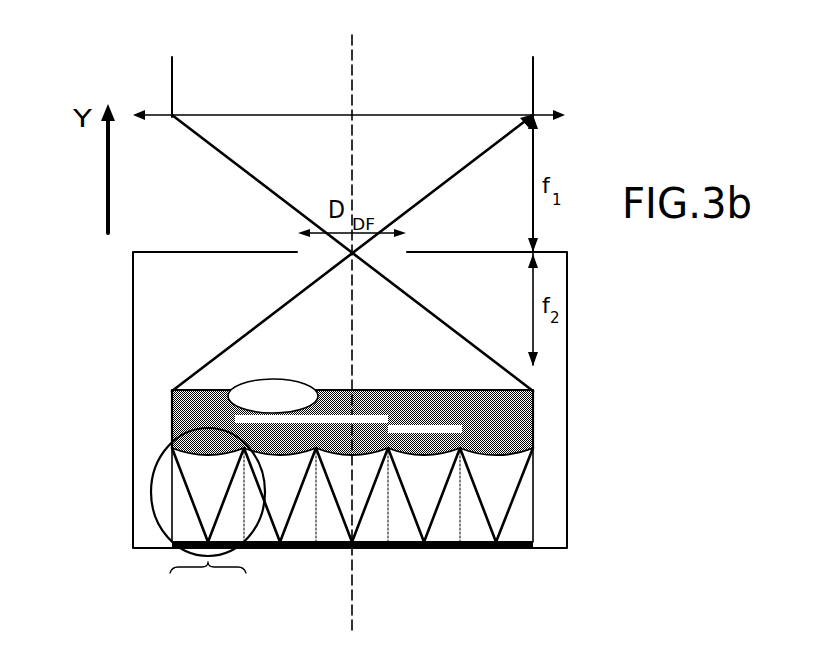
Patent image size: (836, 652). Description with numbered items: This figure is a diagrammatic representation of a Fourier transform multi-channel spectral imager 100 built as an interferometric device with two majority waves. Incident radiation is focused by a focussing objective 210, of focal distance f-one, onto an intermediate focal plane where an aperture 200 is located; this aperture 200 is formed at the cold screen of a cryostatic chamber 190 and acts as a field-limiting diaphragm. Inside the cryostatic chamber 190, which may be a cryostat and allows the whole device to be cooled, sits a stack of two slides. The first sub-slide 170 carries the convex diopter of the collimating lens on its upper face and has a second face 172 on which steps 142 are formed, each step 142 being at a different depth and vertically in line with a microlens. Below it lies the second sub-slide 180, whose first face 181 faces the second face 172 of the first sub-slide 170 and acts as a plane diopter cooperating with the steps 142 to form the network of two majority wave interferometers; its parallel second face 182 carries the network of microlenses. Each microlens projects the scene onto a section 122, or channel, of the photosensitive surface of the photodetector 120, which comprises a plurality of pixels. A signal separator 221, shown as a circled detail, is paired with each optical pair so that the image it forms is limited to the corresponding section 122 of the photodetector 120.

The spectral imager 100 is at (152, 76).
The focussing objective 210 is at (565, 102).
The aperture 200 is at (390, 253).
The cryostatic chamber 190 is at (567, 318).
The first sub-slide 170 is at (500, 395).
The first face of the second sub-slide 181 is at (458, 436).
The second sub-slide 180 is at (497, 451).
The second face of the second sub-slide 182 is at (500, 458).
The steps 142 is at (272, 403).
The second face of the first sub-slide 172 is at (235, 413).
The signal separator 221 is at (177, 555).
The section of the photosensitive surface 122 is at (208, 585).
The photodetector 120 is at (512, 546).